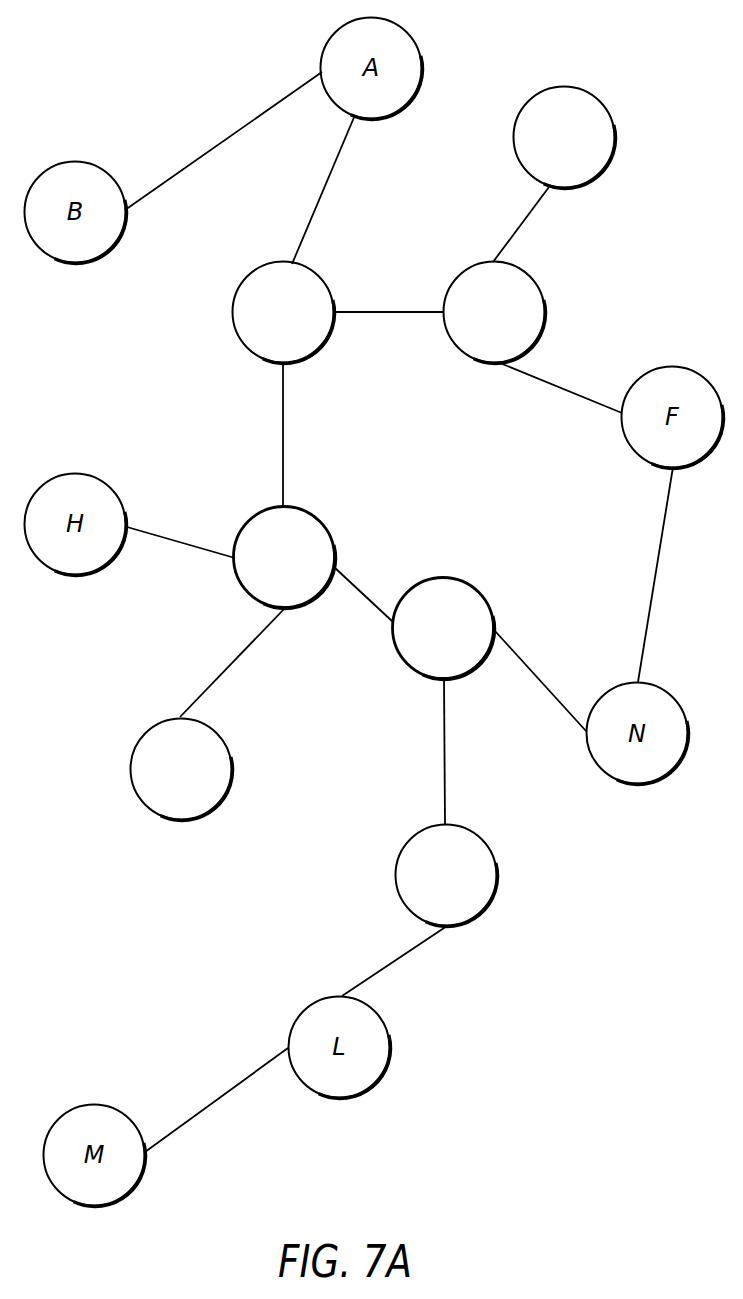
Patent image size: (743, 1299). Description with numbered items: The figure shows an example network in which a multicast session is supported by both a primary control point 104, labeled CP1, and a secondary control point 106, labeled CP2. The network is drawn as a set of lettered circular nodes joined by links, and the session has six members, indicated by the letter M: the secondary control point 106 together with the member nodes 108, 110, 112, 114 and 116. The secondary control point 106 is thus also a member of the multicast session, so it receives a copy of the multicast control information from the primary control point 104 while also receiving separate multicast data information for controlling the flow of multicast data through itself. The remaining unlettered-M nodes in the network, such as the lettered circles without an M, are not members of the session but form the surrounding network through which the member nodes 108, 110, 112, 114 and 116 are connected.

The primary control point 104 is at (320, 522).
The secondary control point 106 is at (465, 580).
The member node 108 is at (318, 273).
The member node 110 is at (530, 273).
The member node 112 is at (563, 87).
The member node 114 is at (221, 733).
The member node 116 is at (497, 873).